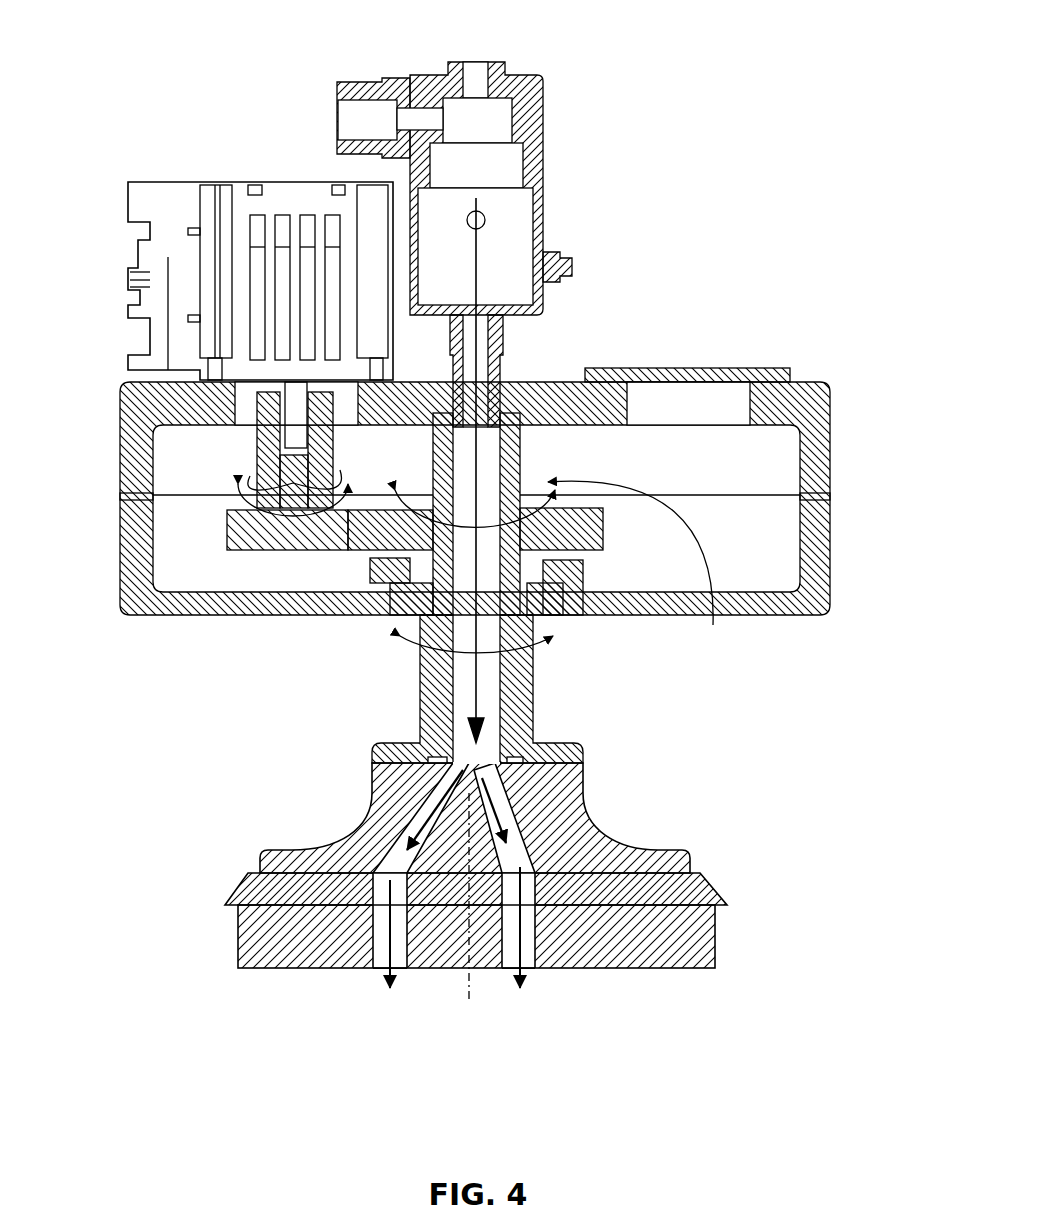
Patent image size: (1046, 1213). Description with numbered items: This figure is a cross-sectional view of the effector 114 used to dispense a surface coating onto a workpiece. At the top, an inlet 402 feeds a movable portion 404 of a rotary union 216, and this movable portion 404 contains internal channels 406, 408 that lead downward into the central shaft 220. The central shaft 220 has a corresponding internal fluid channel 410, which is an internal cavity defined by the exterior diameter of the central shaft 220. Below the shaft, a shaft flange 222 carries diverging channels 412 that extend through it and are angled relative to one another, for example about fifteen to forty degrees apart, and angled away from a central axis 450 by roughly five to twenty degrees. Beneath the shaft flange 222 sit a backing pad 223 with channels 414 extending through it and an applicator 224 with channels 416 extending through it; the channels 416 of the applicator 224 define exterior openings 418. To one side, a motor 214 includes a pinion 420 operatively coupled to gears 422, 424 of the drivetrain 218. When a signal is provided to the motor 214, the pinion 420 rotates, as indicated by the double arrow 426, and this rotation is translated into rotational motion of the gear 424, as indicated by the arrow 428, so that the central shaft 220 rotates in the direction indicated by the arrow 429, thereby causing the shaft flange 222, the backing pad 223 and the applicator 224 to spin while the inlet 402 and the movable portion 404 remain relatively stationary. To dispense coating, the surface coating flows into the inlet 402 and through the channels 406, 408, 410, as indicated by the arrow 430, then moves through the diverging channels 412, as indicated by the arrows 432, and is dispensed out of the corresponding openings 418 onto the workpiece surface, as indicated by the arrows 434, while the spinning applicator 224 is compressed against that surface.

The effector 114 is at (665, 157).
The motor 214 is at (257, 290).
The rotary union 216 is at (520, 50).
The drivetrain 218 is at (828, 378).
The central shaft 220 is at (520, 717).
The shaft flange 222 is at (613, 860).
The backing pad 223 is at (677, 893).
The applicator 224 is at (703, 943).
The inlet 402 is at (368, 92).
The movable portion 404 is at (535, 90).
The internal channel 406 is at (513, 247).
The internal channel 408 is at (487, 343).
The internal fluid channel 410 is at (644, 570).
The diverging channels 412 is at (430, 810).
The channels 414 is at (380, 888).
The channels 416 is at (377, 942).
The openings 418 is at (373, 970).
The pinion 420 is at (297, 428).
The gear 422 is at (250, 533).
The gear 424 is at (360, 537).
The double arrow 426 is at (248, 480).
The arrow 428 is at (420, 490).
The arrow 429 is at (560, 650).
The arrow 430 is at (473, 258).
The arrows 432 is at (417, 822).
The arrows 434 is at (392, 950).
The central axis 450 is at (466, 992).